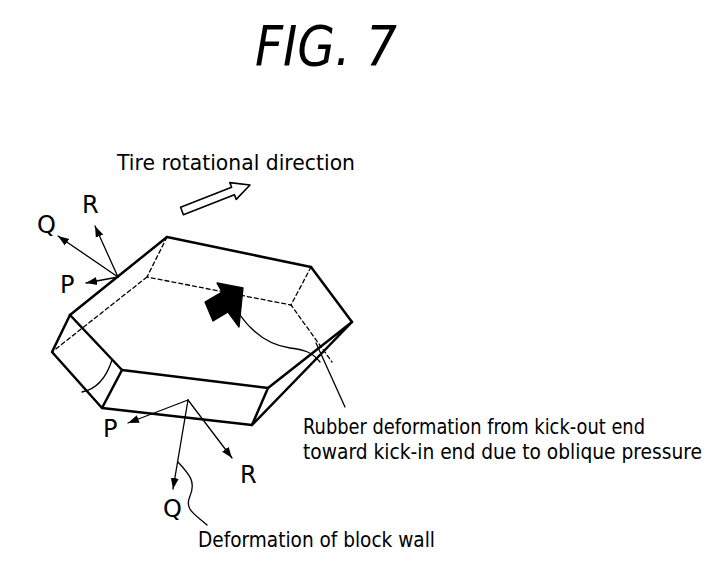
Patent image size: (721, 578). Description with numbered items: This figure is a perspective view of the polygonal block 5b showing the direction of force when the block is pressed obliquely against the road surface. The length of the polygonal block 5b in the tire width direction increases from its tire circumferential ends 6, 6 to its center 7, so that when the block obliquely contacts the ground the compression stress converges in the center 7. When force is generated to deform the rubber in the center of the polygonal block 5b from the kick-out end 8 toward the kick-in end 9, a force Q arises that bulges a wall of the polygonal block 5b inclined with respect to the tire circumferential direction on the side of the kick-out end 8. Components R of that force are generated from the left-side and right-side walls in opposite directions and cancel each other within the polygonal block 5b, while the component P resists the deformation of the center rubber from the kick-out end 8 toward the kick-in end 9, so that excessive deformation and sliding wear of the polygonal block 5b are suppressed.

The polygonal block 5b is at (208, 318).
The tire circumferential end 6 is at (337, 297).
The center 7 is at (166, 237).
The kick-out end 8 is at (77, 365).
The kick-in end 9 is at (328, 320).